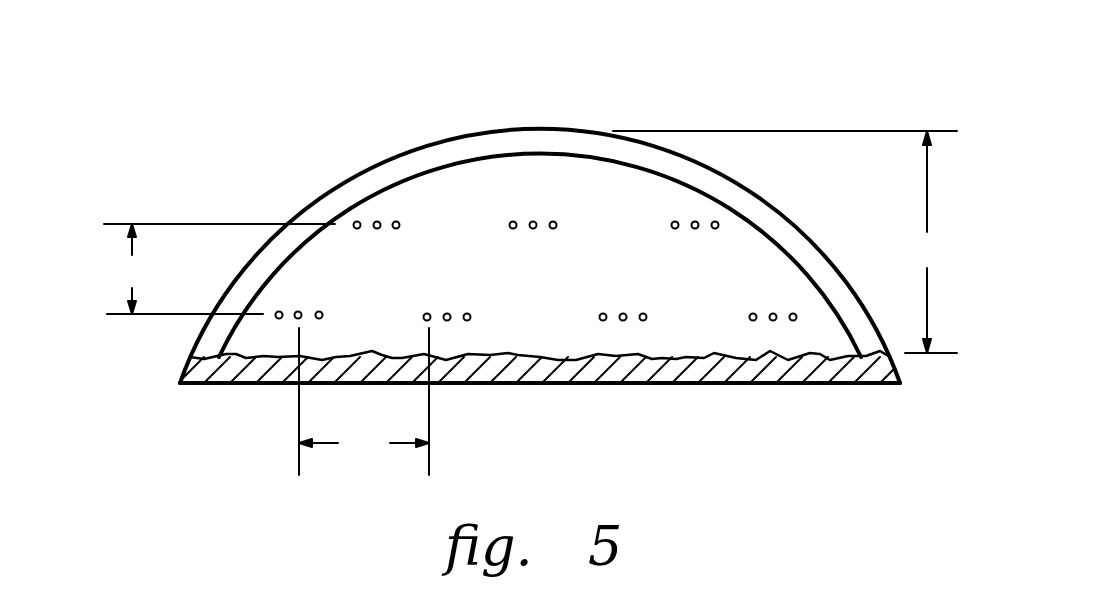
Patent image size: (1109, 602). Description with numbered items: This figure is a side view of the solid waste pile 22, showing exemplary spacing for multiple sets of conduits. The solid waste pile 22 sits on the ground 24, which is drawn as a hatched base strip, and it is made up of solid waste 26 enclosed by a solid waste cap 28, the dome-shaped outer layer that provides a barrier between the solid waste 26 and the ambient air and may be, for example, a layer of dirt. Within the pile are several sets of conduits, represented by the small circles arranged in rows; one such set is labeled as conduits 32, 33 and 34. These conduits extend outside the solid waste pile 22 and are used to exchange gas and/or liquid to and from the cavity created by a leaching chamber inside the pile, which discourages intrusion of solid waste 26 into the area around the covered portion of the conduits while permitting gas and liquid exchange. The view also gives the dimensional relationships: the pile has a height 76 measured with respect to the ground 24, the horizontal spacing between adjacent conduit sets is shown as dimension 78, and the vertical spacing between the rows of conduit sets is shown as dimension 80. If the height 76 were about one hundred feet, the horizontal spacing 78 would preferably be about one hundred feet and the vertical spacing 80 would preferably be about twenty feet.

The solid waste pile 22 is at (540, 202).
The ground 24 is at (760, 383).
The solid waste 26 is at (427, 198).
The solid waste cap 28 is at (452, 155).
The conduit 32 is at (277, 311).
The conduit 33 is at (298, 311).
The conduit 34 is at (324, 314).
The height 76 is at (785, 242).
The horizontal spacing 78 is at (364, 401).
The vertical spacing 80 is at (219, 269).